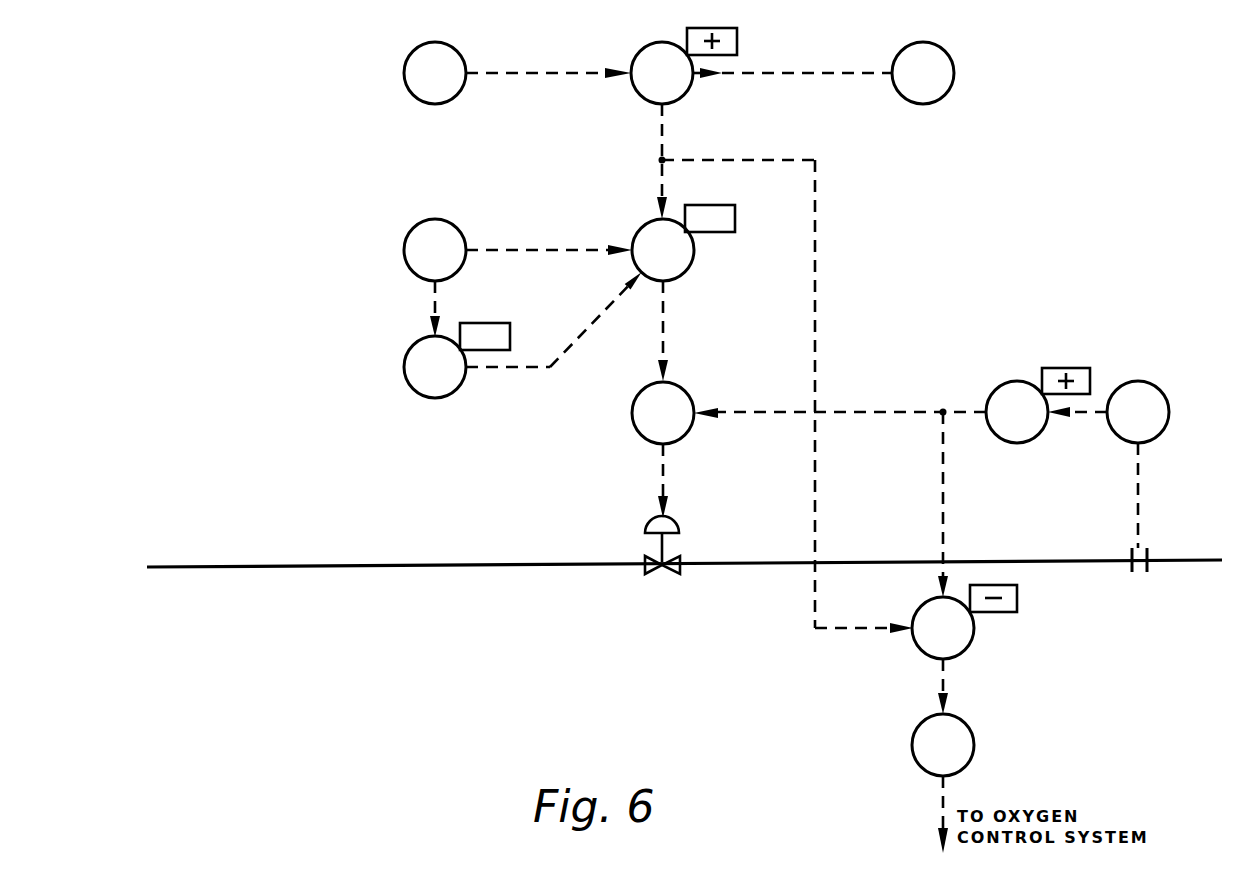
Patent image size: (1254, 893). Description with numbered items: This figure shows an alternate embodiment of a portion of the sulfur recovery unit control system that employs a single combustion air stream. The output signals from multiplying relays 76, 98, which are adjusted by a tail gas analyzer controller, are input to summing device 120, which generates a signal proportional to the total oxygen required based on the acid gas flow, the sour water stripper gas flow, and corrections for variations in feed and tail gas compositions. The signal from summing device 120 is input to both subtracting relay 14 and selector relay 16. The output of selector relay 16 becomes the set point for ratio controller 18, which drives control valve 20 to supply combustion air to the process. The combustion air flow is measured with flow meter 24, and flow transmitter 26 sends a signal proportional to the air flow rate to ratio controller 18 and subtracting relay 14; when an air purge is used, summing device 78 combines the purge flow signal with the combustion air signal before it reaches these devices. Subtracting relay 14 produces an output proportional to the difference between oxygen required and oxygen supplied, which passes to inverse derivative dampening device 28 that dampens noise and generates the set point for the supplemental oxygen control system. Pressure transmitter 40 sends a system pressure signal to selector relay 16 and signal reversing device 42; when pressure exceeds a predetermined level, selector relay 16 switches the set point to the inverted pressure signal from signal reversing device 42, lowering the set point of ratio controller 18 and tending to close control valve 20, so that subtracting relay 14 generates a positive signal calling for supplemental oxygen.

The multiplying relay 76 is at (425, 47).
The summing device 120 is at (648, 50).
The multiplying relay 98 is at (955, 72).
The pressure transmitter 40 is at (443, 222).
The selector relay 16 is at (685, 273).
The signal reversing device 42 is at (450, 396).
The ratio controller 18 is at (690, 393).
The control valve 20 is at (672, 526).
The summing device 78 is at (1000, 386).
The flow transmitter 26 is at (1162, 392).
The flow meter 24 is at (1150, 560).
The subtracting relay 14 is at (973, 636).
The inverse derivative dampening device 28 is at (973, 745).